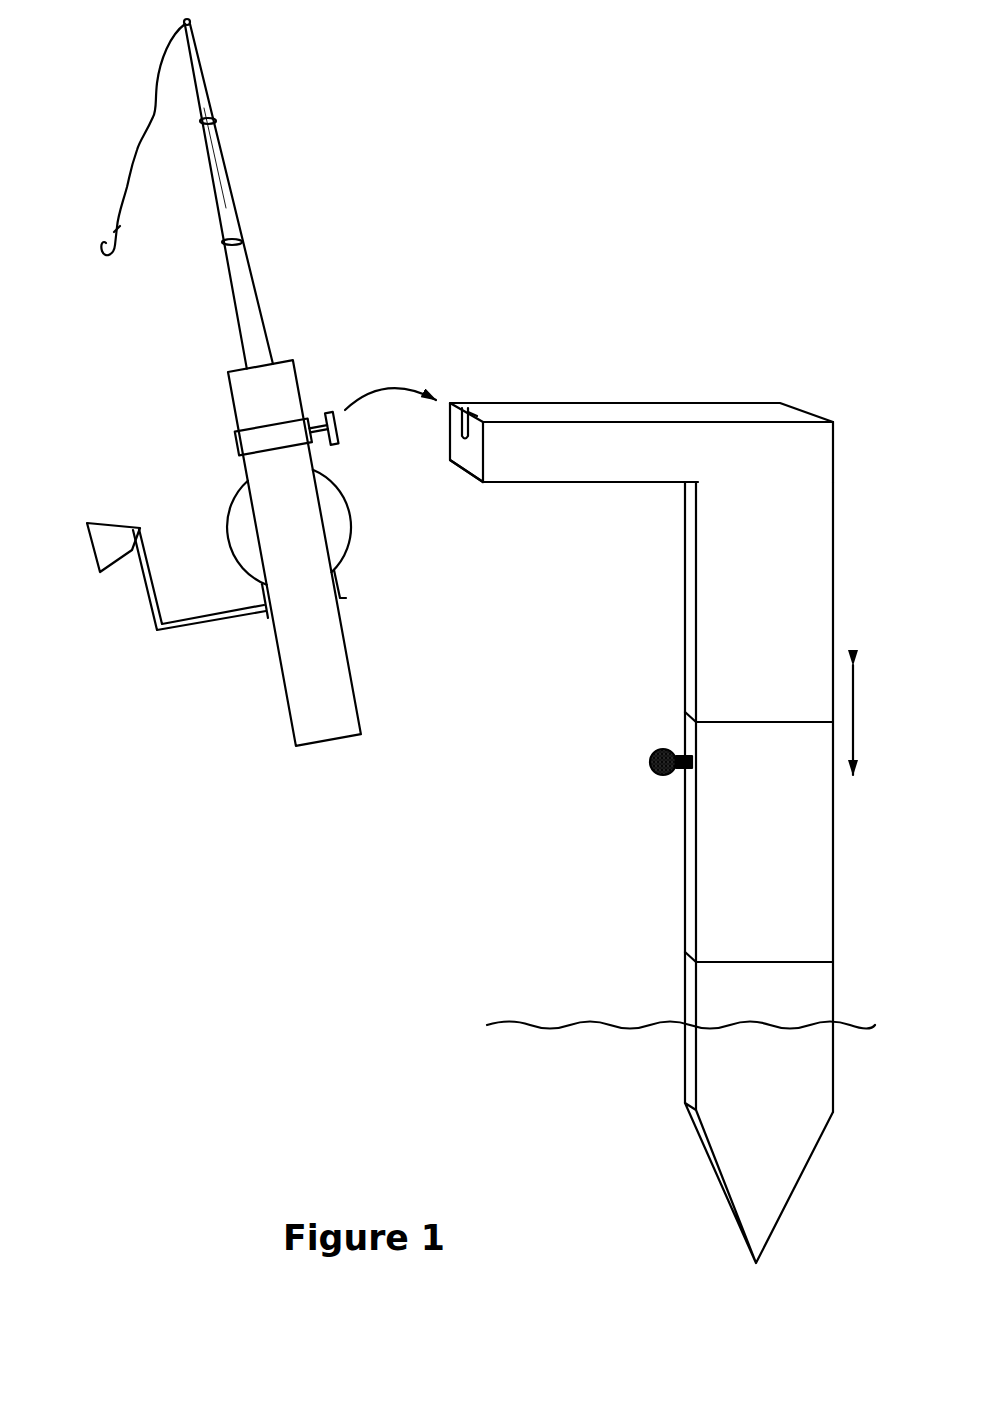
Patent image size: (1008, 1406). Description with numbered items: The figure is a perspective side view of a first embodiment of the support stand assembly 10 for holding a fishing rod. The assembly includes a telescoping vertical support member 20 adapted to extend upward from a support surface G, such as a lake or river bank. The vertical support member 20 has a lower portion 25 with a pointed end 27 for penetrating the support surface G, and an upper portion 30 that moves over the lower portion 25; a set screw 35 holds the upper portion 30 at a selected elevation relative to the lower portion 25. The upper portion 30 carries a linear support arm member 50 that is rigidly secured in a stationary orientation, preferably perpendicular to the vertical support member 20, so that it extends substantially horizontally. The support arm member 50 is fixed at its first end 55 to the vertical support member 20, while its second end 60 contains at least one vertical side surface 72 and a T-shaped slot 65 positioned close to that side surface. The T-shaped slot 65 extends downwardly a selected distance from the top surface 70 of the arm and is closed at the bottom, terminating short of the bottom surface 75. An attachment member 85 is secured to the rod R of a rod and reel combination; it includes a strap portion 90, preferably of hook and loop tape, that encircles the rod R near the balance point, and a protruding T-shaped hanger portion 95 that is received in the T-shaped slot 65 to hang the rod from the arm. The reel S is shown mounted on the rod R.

The support stand assembly 10 is at (735, 195).
The vertical support member 20 is at (655, 872).
The lower portion 25 is at (738, 988).
The pointed end 27 is at (739, 1160).
The upper portion 30 is at (737, 627).
The set screw 35 is at (653, 778).
The linear support arm member 50 is at (614, 402).
The first end 55 is at (740, 440).
The second end 60 is at (493, 402).
The T-shaped slot 65 is at (481, 400).
The top surface 70 is at (534, 400).
The vertical side surface 72 is at (470, 455).
The bottom surface 75 is at (545, 492).
The attachment member 85 is at (246, 417).
The strap portion 90 is at (228, 443).
The T-shaped hanger portion 95 is at (333, 398).
The rod R is at (303, 642).
The reel crank S is at (224, 557).
The support surface G is at (681, 1061).